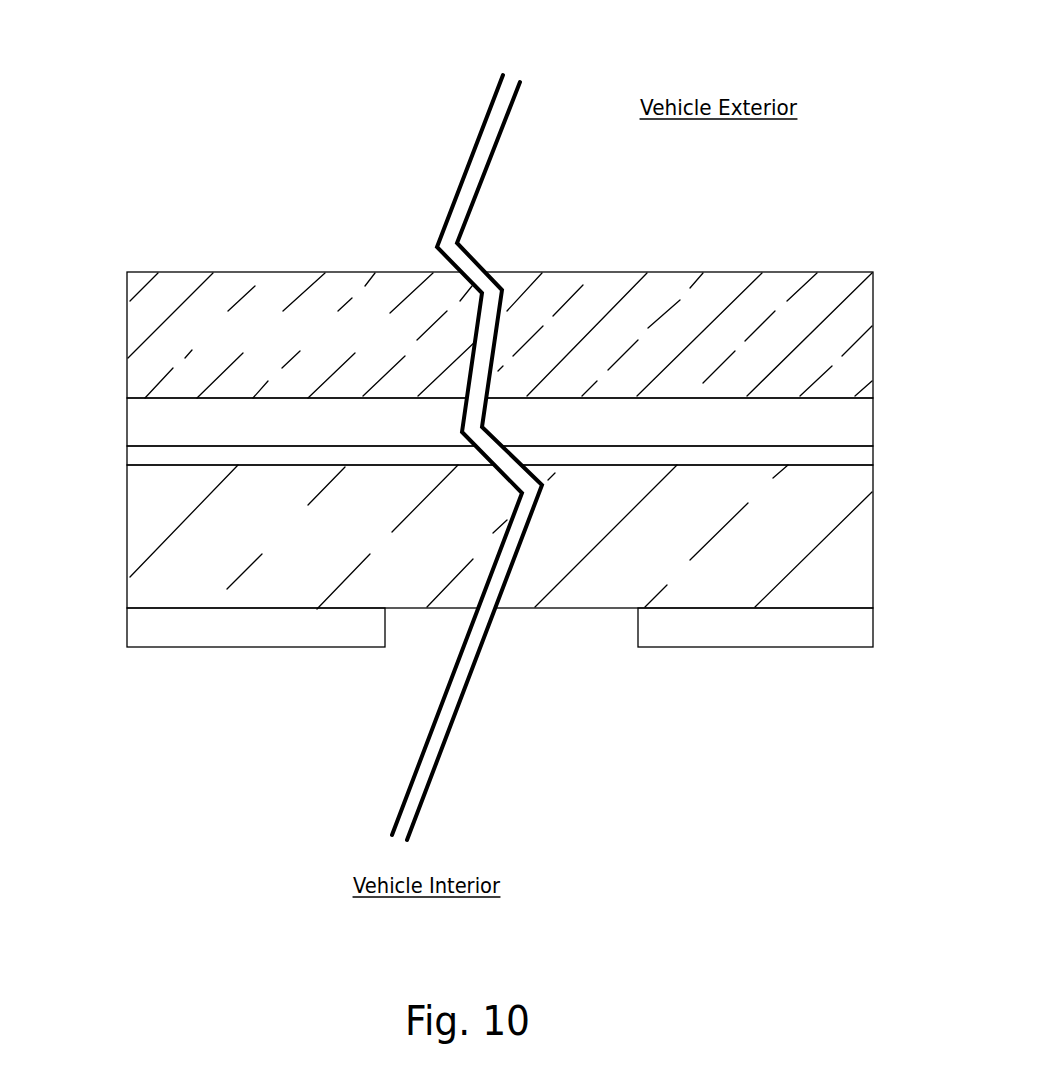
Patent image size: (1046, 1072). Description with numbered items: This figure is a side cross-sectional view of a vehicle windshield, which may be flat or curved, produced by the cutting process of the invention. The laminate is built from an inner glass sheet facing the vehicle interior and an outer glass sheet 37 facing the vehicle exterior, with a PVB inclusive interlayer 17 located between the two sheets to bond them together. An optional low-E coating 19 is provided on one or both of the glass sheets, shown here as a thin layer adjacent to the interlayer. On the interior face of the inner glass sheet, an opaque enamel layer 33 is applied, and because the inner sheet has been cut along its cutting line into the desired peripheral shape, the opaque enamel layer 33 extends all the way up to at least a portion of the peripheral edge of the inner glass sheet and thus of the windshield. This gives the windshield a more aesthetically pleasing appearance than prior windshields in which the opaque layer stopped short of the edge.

The outer glass sheet 37 is at (663, 287).
The PVB inclusive interlayer 17 is at (866, 420).
The low-E coating 19 is at (865, 456).
The opaque enamel layer 33 is at (350, 633).